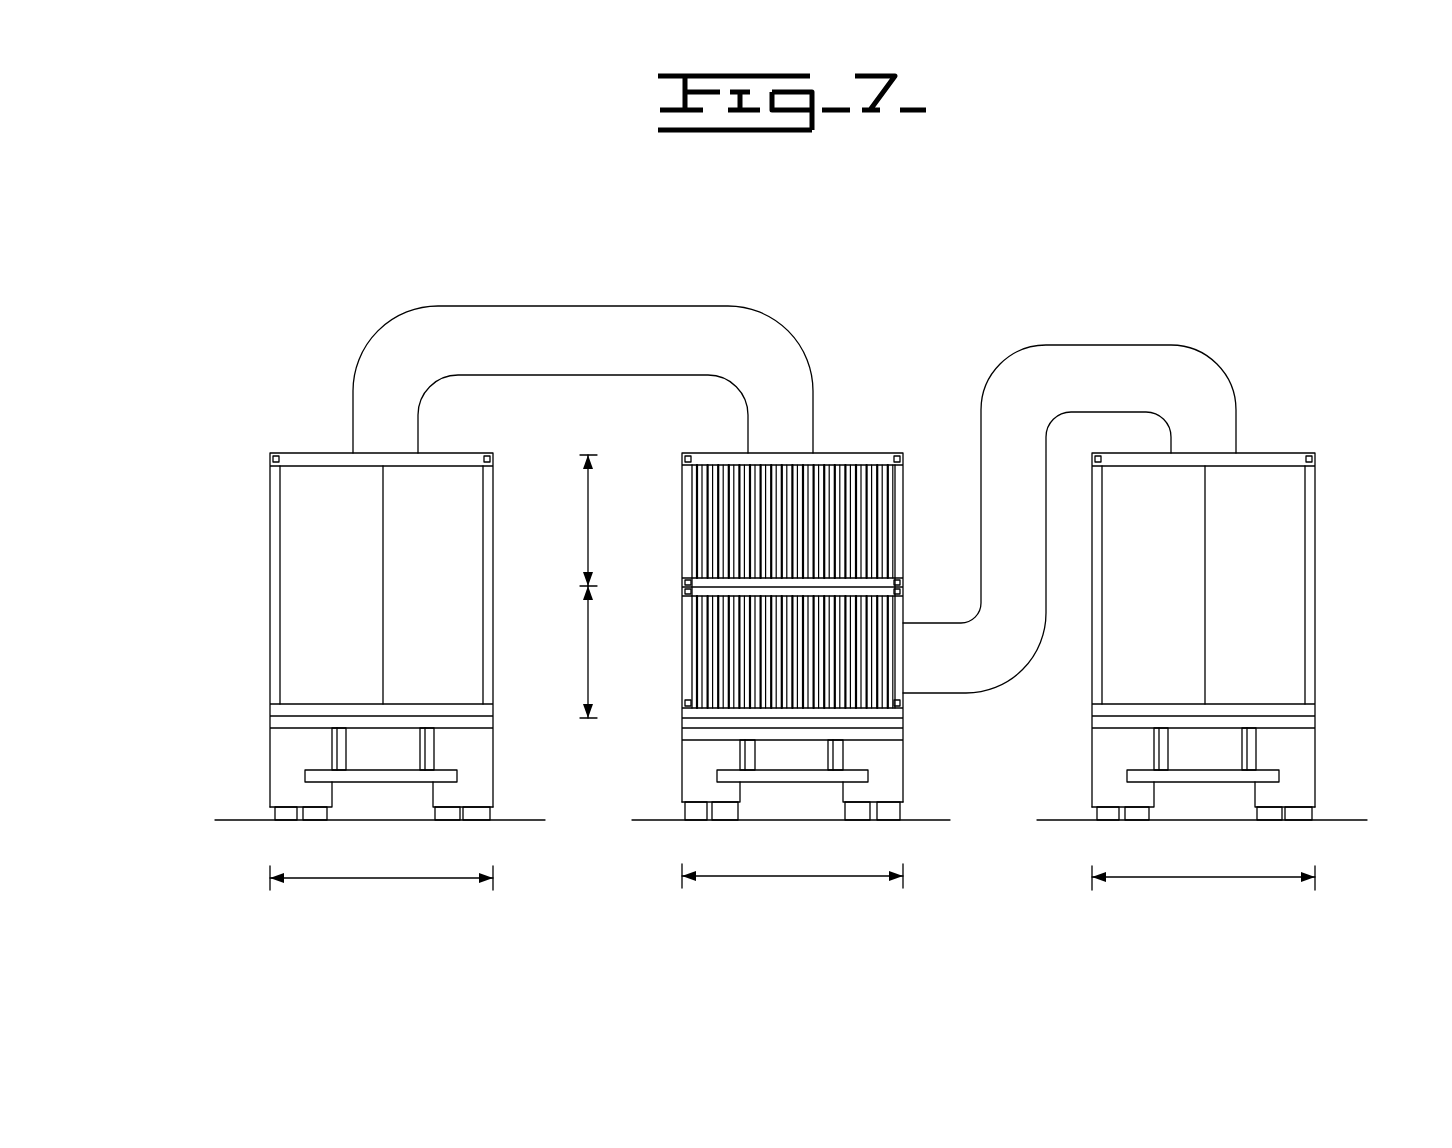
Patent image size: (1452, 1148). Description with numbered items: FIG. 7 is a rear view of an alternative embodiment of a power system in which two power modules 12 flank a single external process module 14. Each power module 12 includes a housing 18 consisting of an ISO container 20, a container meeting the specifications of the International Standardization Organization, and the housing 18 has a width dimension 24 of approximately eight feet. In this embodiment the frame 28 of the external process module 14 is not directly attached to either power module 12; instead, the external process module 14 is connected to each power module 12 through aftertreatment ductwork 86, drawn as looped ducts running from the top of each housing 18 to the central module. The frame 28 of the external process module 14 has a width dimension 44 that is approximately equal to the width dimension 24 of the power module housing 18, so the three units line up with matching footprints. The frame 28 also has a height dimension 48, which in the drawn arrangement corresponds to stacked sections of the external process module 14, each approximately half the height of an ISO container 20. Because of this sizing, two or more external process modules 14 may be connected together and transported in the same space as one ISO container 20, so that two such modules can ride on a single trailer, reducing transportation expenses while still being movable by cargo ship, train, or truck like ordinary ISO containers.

The power module 12 is at (258, 452).
The external process module 14 is at (795, 628).
The housing 18 is at (493, 538).
The ISO container 20 is at (270, 562).
The width dimension 24 is at (378, 880).
The frame 28 is at (682, 628).
The width dimension 44 is at (800, 878).
The height dimension 48 is at (588, 490).
The aftertreatment ductwork 86 is at (585, 306).